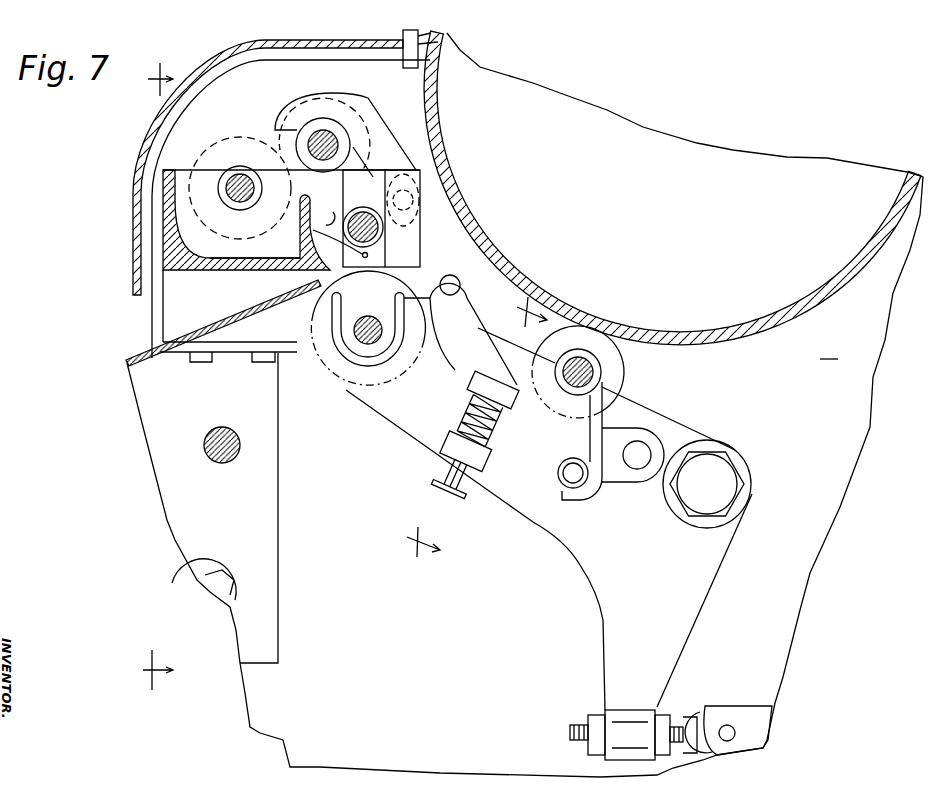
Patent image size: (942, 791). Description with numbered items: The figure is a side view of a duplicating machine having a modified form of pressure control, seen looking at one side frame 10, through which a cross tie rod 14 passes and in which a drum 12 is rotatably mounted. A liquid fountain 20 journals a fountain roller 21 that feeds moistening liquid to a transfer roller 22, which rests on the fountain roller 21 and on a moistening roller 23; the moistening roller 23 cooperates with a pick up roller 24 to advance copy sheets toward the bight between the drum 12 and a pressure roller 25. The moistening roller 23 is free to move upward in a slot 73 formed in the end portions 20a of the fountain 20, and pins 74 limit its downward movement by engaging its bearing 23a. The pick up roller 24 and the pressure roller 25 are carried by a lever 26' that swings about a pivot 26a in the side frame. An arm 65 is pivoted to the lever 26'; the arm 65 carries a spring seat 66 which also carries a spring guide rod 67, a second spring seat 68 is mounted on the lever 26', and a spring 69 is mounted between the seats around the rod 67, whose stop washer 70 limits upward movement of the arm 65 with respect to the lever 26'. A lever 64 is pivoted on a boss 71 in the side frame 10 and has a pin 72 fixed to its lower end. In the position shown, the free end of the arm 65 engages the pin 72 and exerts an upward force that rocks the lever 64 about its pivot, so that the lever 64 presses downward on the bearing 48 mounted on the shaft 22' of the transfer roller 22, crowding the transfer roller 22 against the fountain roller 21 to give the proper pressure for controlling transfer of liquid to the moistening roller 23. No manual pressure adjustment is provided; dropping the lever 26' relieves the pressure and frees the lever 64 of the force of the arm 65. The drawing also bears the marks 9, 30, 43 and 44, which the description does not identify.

The section line 9- 9 is at (150, 376).
The side frame 10 is at (611, 427).
The drum 12 is at (569, 300).
The cross tie rod 14 is at (222, 458).
The liquid fountain 20 is at (200, 270).
The end portions of the fountain 20a is at (418, 161).
The fountain roller 21 is at (212, 150).
The transfer roller 22 is at (286, 133).
The shaft of the transfer roller 22' is at (312, 120).
The moistening roller 23 is at (290, 238).
The bearing for the moistening roller 23a is at (363, 219).
The pick up roller 24 is at (322, 366).
The pressure roller 25 is at (622, 372).
The lever 26' is at (549, 519).
The pivot 26a is at (724, 480).
The mounting plate 30 is at (268, 491).
The bracket 43 is at (735, 712).
The adjusting nut assembly 44 is at (686, 716).
The bearing 48 is at (300, 145).
The lever 64 is at (366, 98).
The arm 65 is at (462, 372).
The spring seat 66 is at (488, 377).
The spring guide rod 67 is at (443, 473).
The second spring seat 68 is at (483, 458).
The spring 69 is at (462, 423).
The stop washer 70 is at (432, 492).
The boss 71 is at (440, 191).
The pin 72 is at (450, 280).
The slot 73 is at (330, 215).
The pins 74 is at (340, 244).